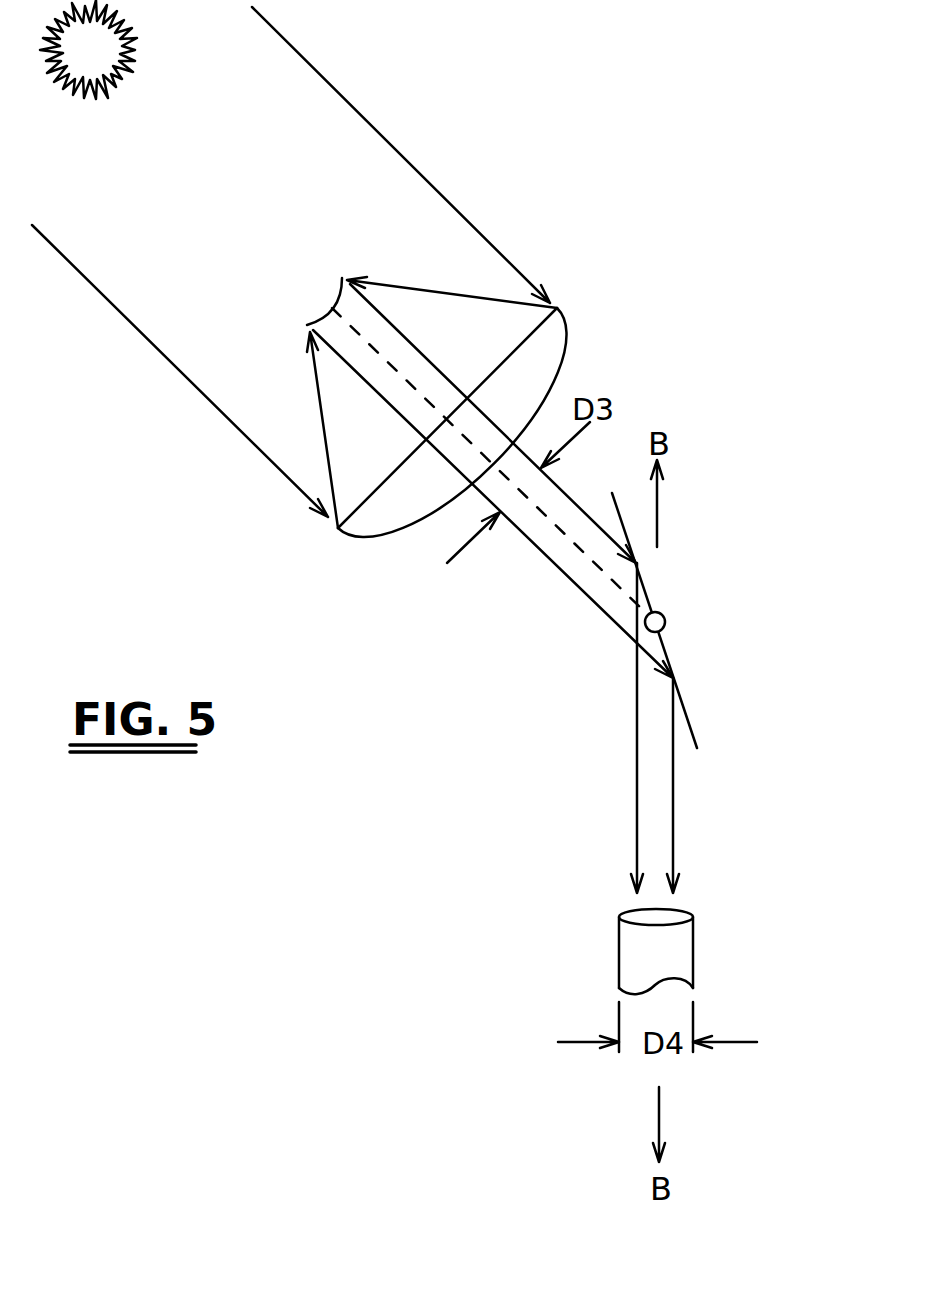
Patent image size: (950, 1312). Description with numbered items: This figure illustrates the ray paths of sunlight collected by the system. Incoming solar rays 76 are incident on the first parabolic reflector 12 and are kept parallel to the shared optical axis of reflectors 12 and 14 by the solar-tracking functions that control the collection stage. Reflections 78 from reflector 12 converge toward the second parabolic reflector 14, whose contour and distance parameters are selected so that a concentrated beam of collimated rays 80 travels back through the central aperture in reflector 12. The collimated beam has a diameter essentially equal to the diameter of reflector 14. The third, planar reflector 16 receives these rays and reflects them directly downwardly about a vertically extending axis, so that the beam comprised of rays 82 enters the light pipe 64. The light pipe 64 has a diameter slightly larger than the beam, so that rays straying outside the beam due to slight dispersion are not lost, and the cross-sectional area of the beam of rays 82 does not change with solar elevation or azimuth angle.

The first parabolic reflector 12 is at (567, 328).
The second parabolic reflector 14 is at (340, 278).
The third planar reflector 16 is at (692, 728).
The light pipe 64 is at (618, 945).
The solar rays 76 is at (400, 152).
The reflections 78 is at (500, 298).
The collimated rays 80 is at (567, 480).
The rays of the downwardly reflected beam 82 is at (637, 775).